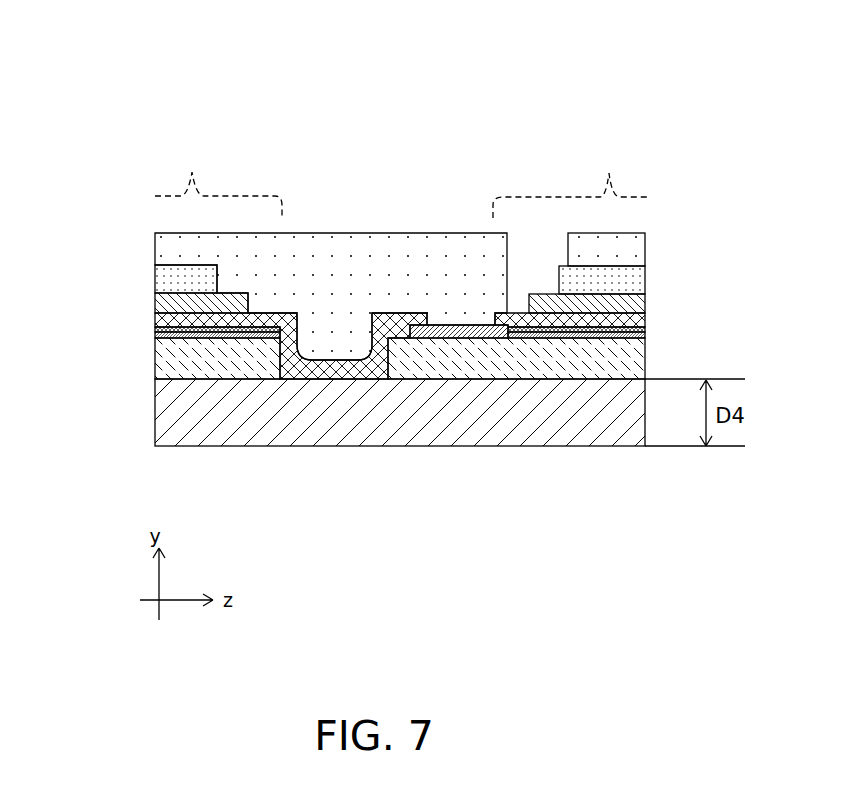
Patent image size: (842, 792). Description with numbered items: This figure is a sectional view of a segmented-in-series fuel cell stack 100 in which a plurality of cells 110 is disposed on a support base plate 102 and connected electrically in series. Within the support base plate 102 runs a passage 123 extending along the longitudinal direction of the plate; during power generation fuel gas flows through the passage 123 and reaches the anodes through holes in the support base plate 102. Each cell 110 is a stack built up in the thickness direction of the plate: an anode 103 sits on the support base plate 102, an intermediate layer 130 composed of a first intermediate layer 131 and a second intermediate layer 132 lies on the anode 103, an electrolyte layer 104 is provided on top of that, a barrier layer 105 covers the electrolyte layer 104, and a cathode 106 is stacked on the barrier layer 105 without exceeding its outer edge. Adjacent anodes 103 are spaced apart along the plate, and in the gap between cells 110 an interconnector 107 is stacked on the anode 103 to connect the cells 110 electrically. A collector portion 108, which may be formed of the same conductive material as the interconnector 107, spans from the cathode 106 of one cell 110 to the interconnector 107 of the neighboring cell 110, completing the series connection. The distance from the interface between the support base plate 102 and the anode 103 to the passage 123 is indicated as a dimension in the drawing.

The segmented-in-series fuel cell stack 100 is at (282, 62).
The support base plate 102 is at (525, 445).
The anode 103 is at (160, 358).
The electrolyte layer 104 is at (160, 319).
The barrier layer 105 is at (160, 300).
The cathode 106 is at (160, 272).
The interconnector 107 is at (415, 332).
The collector portion 108 is at (335, 245).
The cell 110 is at (192, 172).
The passage 123 is at (243, 488).
The intermediate layer 130 is at (64, 317).
The first intermediate layer 131 is at (160, 329).
The second intermediate layer 132 is at (160, 335).